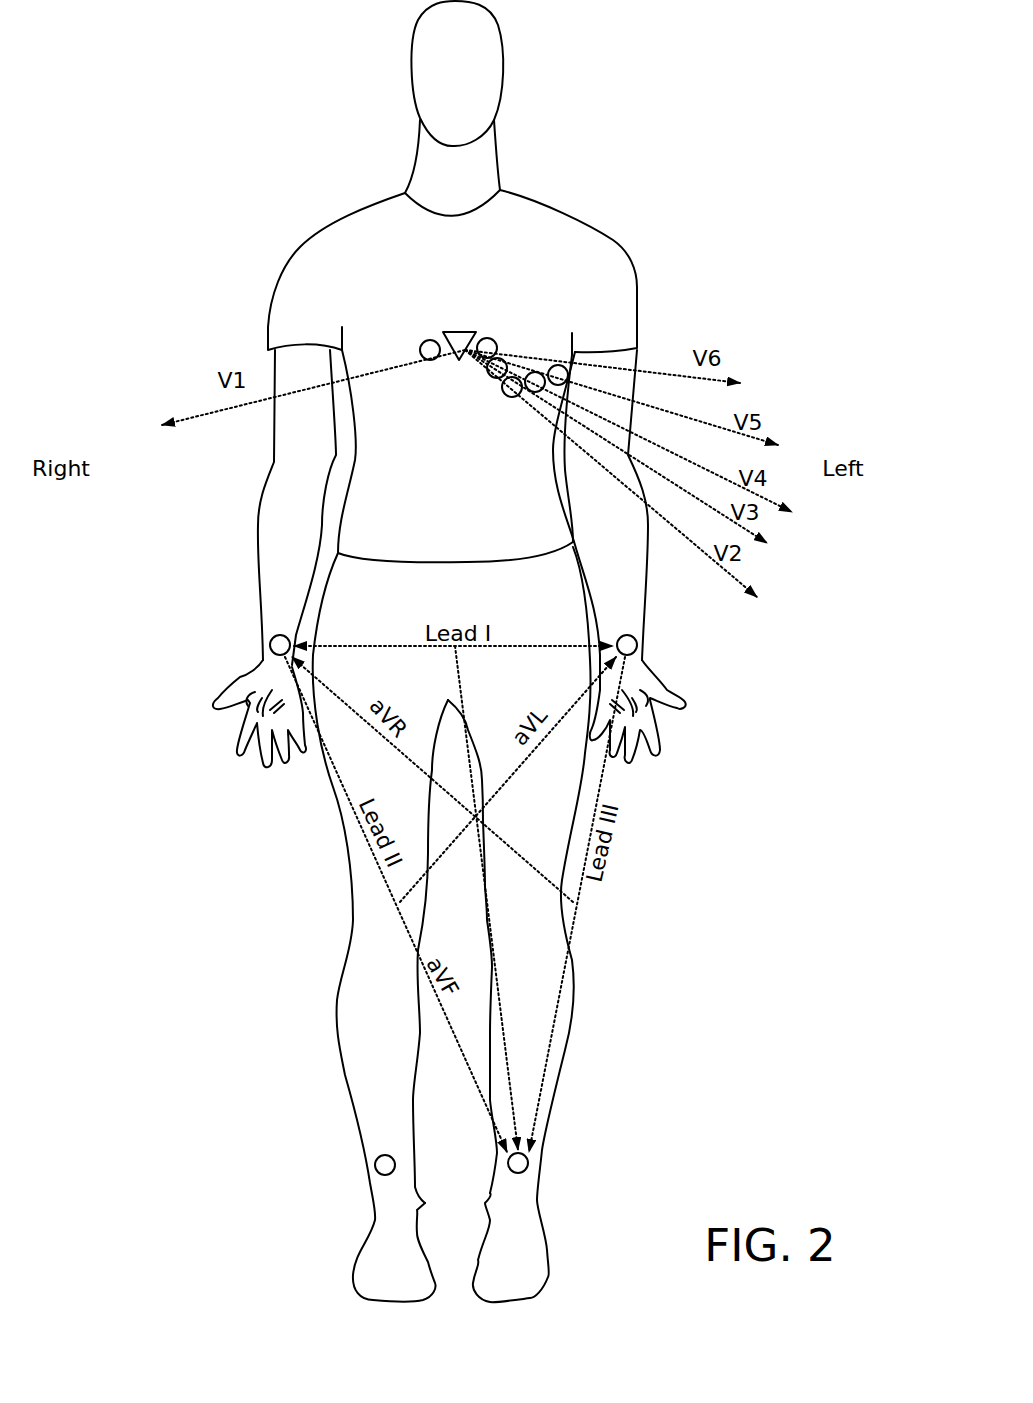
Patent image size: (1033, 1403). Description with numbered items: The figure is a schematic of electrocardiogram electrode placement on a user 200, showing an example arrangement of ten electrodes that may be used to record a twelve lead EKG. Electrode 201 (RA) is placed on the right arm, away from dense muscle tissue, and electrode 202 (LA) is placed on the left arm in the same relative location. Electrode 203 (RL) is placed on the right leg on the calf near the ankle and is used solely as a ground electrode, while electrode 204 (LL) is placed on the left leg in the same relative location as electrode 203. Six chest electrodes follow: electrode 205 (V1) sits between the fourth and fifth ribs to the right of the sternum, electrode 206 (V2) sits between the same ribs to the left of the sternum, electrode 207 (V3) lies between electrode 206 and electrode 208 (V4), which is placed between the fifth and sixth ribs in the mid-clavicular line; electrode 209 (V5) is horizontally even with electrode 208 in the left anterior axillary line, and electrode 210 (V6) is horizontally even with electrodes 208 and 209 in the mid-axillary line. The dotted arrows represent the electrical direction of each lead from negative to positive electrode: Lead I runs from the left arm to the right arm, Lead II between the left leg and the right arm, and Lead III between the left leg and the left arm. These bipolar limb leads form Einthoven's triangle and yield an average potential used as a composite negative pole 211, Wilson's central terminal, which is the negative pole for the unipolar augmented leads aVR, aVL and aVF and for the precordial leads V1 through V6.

The user 200 is at (187, 157).
The electrode (RA) 201 is at (276, 635).
The electrode (LA) 202 is at (630, 634).
The electrode (RL) 203 is at (378, 1156).
The electrode (LL) 204 is at (526, 1172).
The electrode (V1) 205 is at (423, 352).
The electrode (V2) 206 is at (487, 338).
The electrode (V3) 207 is at (498, 358).
The electrode (V4) 208 is at (510, 397).
The electrode (V5) 209 is at (537, 372).
The electrode (V6) 210 is at (558, 365).
The composite negative pole 211 is at (455, 360).